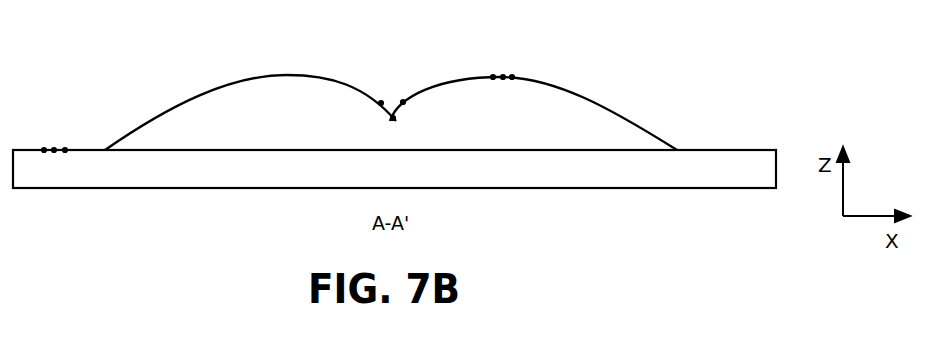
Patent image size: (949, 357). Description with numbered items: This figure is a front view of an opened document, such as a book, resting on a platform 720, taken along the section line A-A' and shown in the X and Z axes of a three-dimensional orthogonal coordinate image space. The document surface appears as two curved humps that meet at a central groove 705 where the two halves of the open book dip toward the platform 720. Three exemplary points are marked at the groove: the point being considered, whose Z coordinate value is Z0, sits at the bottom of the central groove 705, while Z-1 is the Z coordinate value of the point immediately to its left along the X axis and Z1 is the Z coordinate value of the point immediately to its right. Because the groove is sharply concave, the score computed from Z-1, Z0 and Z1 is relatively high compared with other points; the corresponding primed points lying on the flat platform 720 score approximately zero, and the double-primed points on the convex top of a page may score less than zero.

The central groove 705 is at (392, 118).
The platform 720 is at (762, 150).
The Z coordinate value of the point immediately to the left Z-1 is at (264, 100).
The Z coordinate value of the point being considered Z0 is at (287, 127).
The Z coordinate value of the point immediately to the right Z1 is at (301, 102).